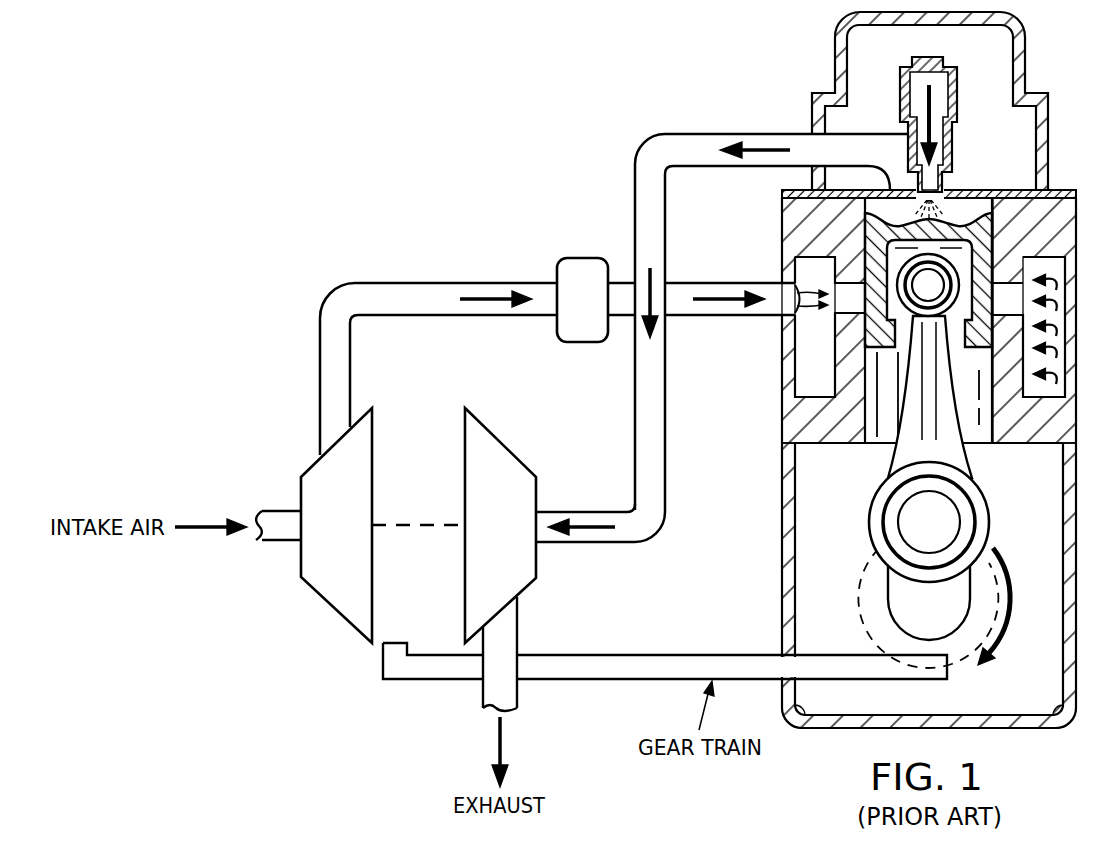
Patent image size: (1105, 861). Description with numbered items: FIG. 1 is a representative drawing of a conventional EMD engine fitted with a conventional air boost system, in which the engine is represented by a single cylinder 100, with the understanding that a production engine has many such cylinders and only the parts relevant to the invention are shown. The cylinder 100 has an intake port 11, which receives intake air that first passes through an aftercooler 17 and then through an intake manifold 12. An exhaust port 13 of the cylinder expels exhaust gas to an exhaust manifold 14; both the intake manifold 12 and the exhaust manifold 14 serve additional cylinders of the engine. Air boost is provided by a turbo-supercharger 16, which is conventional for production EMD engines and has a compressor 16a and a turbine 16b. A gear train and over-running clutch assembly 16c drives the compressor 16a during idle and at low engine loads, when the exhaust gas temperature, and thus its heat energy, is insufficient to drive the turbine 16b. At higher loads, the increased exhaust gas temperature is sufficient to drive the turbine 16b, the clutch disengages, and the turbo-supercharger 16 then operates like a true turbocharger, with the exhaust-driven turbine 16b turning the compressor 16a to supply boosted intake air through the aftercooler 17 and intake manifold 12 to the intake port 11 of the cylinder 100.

The intake port 11 is at (826, 286).
The intake manifold 12 is at (718, 295).
The exhaust port 13 is at (888, 172).
The exhaust manifold 14 is at (712, 145).
The turbo-supercharger 16 is at (380, 595).
The compressor 16a is at (300, 553).
The turbine 16b is at (463, 572).
The gear train and over-running clutch assembly 16c is at (600, 682).
The aftercooler 17 is at (582, 268).
The cylinder 100 is at (983, 430).